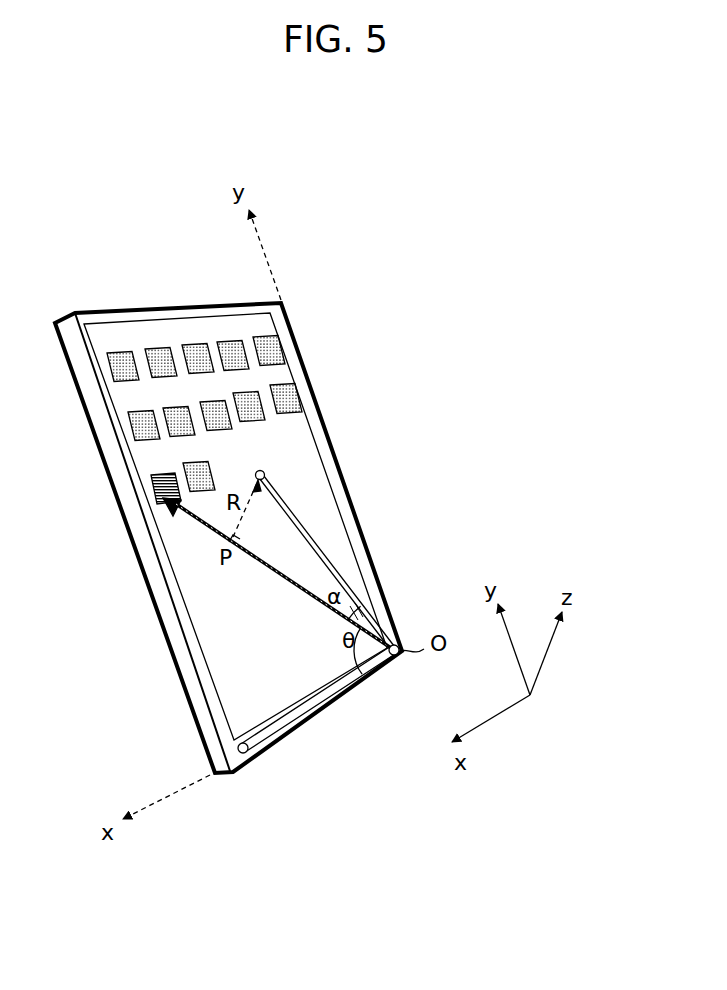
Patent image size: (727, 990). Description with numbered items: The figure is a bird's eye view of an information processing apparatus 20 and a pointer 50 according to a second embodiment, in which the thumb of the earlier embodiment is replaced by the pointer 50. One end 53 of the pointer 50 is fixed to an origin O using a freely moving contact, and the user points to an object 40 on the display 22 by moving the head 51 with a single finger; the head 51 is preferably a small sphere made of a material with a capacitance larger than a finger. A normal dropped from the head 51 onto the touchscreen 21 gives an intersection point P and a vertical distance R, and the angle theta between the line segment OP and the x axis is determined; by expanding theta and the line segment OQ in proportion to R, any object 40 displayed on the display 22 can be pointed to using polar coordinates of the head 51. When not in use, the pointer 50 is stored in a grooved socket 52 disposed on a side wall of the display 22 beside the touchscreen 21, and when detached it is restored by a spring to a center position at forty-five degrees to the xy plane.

The electronic device housing 20 is at (228, 538).
The touchscreen 21 is at (153, 345).
The display 22 is at (296, 359).
The object 40 is at (152, 499).
The pointer 50 is at (296, 518).
The head 51 is at (256, 471).
The socket 52 is at (300, 720).
The one end 53 is at (395, 661).